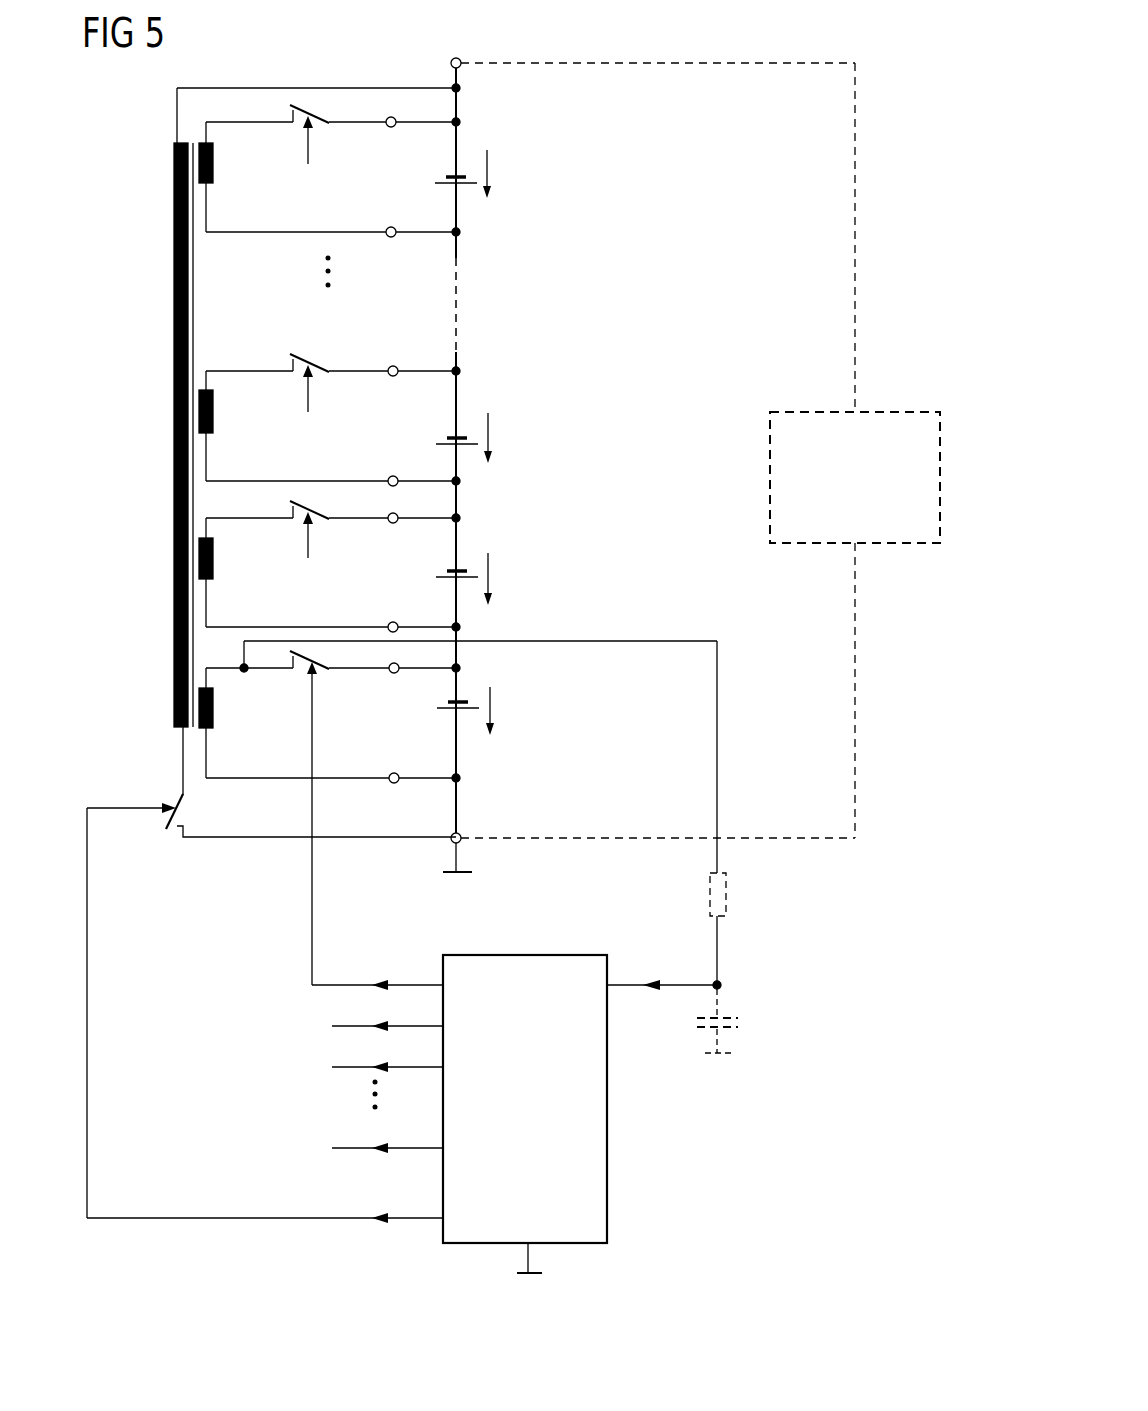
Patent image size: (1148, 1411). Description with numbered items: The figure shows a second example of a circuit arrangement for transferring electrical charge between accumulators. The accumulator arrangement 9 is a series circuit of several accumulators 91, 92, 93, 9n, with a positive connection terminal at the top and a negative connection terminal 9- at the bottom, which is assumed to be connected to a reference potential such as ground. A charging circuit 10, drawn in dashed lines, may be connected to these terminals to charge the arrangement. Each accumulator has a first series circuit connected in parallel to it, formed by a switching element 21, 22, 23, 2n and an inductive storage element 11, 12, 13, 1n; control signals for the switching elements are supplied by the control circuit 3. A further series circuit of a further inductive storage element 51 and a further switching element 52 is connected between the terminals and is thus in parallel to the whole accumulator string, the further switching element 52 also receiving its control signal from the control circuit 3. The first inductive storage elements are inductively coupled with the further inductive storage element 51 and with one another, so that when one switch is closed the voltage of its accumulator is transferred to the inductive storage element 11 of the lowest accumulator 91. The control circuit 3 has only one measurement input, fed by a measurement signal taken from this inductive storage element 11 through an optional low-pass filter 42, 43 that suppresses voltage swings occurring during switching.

The accumulator arrangement 9 is at (491, 138).
The second connection terminal 9- is at (453, 846).
The accumulator 9n is at (446, 177).
The accumulator 93 is at (447, 438).
The accumulator 92 is at (447, 571).
The accumulator 91 is at (448, 702).
The inductive storage element 1n is at (213, 162).
The inductive storage element 13 is at (213, 412).
The inductive storage element 12 is at (213, 558).
The inductive storage element 11 is at (213, 707).
The switching element 2n is at (313, 124).
The switching element 23 is at (316, 373).
The switching element 22 is at (316, 520).
The switching element 21 is at (318, 670).
The further inductive storage element 51 is at (173, 420).
The further switching element 52 is at (173, 803).
The control circuit 3 is at (525, 955).
The charging circuit 10 is at (884, 411).
The low-pass filter 42 is at (710, 895).
The low-pass filter 43 is at (738, 1022).